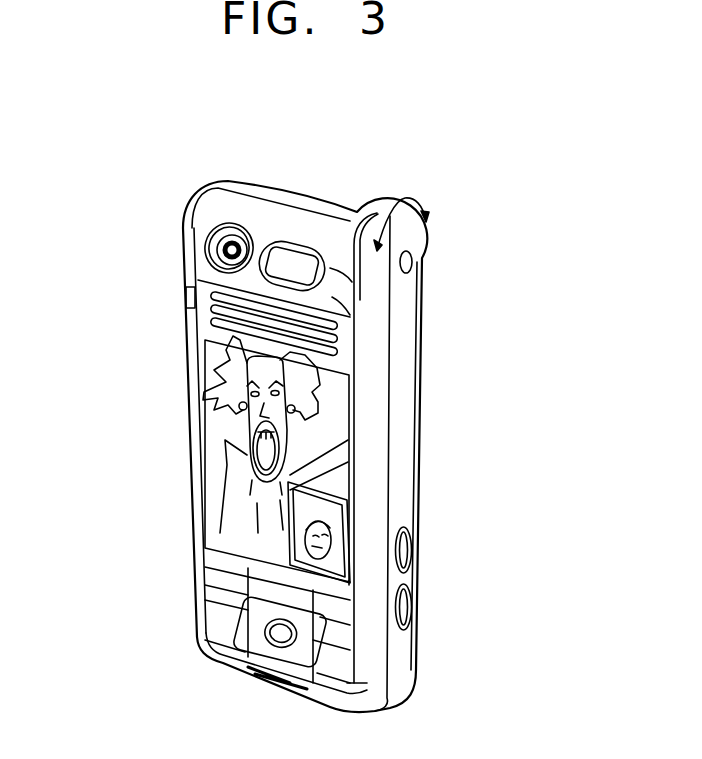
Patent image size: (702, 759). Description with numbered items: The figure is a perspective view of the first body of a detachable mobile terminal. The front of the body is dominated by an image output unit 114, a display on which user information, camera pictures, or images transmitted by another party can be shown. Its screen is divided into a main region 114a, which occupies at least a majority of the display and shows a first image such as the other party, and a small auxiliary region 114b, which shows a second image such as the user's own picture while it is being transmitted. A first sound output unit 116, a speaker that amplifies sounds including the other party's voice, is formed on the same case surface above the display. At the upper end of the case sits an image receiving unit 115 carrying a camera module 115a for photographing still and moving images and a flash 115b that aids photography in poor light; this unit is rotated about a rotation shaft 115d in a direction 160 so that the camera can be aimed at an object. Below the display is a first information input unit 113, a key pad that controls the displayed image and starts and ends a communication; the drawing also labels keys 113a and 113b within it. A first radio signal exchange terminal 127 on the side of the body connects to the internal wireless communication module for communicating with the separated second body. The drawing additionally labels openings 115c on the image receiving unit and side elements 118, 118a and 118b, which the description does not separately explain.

The first information input unit 113 is at (288, 641).
The call key 113a is at (207, 632).
The end key 113b is at (347, 680).
The image output unit 114 is at (190, 460).
The main region 114a is at (227, 420).
The auxiliary region 114b is at (290, 503).
The image receiving unit 115 is at (315, 213).
The camera module 115a is at (287, 263).
The flash 115b is at (222, 243).
The speaker holes 115c is at (255, 317).
The rotation shaft 115d is at (412, 261).
The first sound output unit 116 is at (312, 327).
The side keys 118 is at (487, 582).
The first side key 118a is at (409, 548).
The second side key 118b is at (409, 607).
The first radio signal exchange terminal 127 is at (185, 293).
The direction 160 is at (401, 211).